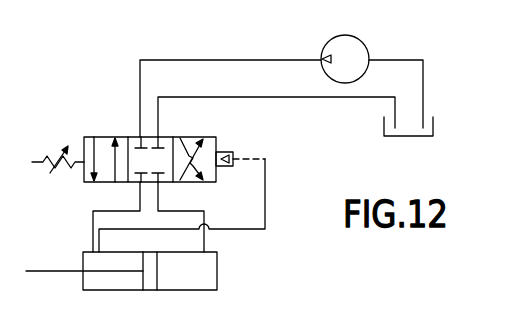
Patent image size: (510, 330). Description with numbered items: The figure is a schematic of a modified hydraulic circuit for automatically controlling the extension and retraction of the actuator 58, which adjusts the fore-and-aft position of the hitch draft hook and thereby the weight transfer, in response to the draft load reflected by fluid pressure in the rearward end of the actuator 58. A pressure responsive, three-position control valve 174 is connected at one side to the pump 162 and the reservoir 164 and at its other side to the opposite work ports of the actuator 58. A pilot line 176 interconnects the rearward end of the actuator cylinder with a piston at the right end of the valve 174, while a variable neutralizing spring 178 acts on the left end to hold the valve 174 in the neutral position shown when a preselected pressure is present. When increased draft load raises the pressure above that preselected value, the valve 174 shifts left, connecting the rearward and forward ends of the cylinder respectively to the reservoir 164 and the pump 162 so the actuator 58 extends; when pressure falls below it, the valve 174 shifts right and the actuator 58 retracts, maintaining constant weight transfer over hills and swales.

The actuator 58 is at (169, 291).
The pump 162 is at (363, 50).
The reservoir 164 is at (434, 127).
The control valve 174 is at (180, 137).
The pilot line 176 is at (265, 203).
The variable neutralizing spring 178 is at (50, 153).